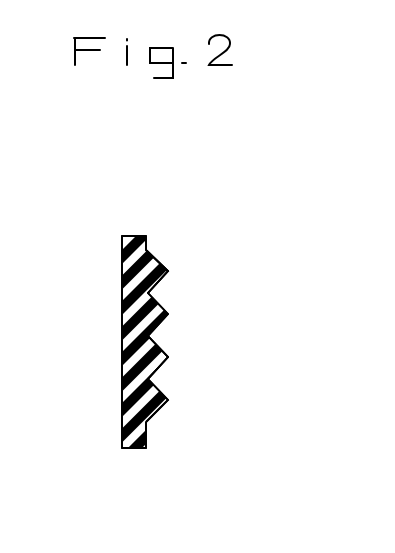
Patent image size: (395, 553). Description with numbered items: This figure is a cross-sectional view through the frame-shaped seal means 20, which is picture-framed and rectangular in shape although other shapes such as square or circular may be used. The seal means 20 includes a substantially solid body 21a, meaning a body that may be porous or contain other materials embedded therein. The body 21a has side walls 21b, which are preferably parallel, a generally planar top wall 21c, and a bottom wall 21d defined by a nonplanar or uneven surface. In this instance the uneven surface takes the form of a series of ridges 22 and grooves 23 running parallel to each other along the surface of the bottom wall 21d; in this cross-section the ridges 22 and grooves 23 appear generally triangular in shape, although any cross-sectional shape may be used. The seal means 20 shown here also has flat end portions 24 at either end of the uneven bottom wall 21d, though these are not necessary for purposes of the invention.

The seal means 20 is at (106, 196).
The substantially solid body 21a is at (122, 302).
The side walls 21b is at (137, 236).
The top wall 21c is at (122, 323).
The bottom wall 21d is at (204, 384).
The ridges 22 is at (163, 276).
The grooves 23 is at (161, 371).
The flat end portions 24 is at (146, 243).